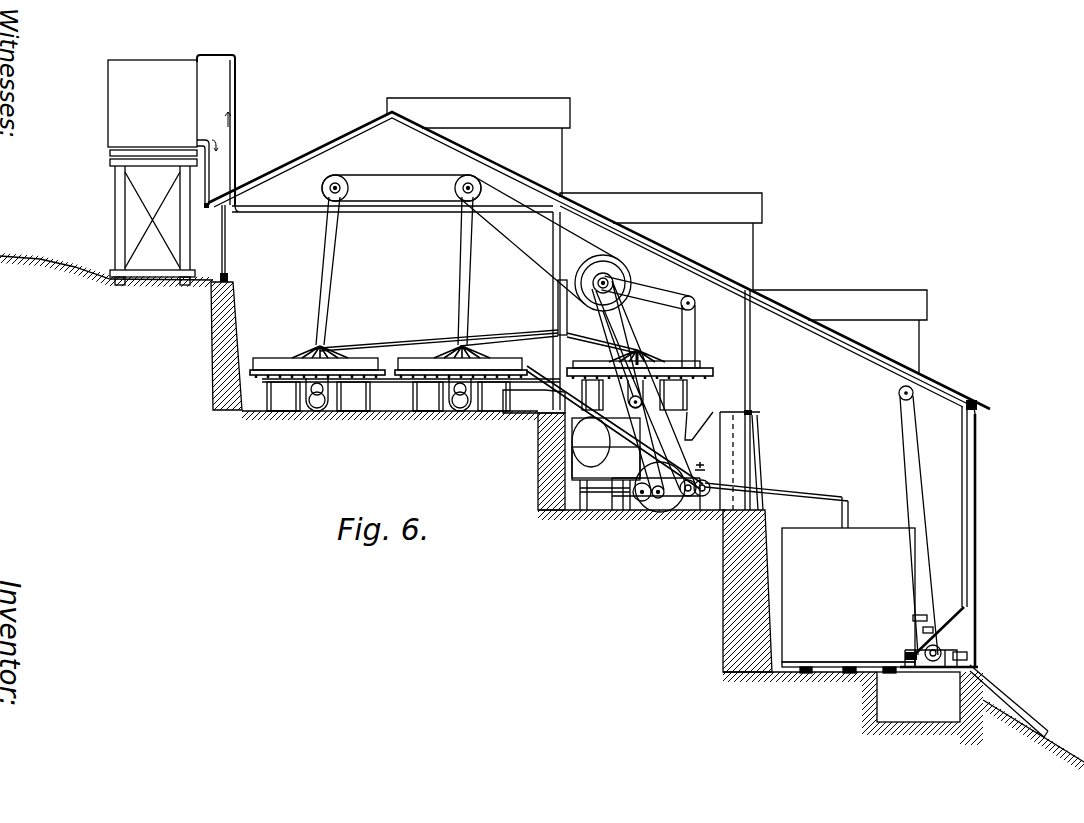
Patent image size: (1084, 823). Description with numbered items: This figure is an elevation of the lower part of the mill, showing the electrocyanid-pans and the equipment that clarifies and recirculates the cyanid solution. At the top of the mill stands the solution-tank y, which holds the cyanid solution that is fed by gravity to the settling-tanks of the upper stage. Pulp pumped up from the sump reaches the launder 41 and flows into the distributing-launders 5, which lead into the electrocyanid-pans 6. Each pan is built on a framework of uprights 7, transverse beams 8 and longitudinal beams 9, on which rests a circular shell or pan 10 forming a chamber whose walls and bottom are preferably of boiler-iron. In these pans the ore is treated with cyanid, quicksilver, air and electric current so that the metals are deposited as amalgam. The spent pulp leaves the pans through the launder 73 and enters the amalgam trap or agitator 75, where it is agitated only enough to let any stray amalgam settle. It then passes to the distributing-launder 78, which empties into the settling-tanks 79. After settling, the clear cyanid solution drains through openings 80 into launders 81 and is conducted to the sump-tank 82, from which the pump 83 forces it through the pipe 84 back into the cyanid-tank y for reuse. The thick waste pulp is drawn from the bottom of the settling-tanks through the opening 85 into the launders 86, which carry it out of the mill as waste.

The solution-tank y is at (108, 93).
The launder 41 is at (557, 282).
The distributing-launders 5 is at (507, 334).
The electrocyanid-pans 6 is at (473, 281).
The uprights 7 is at (477, 395).
The transverse beams 8 is at (284, 411).
The longitudinal beams 9 is at (266, 406).
The circular shell or pan 10 is at (262, 358).
The launder 73 is at (603, 427).
The amalgam trap or agitator 75 is at (582, 461).
The distributing-launder 78 is at (785, 491).
The settling-tanks 79 is at (848, 600).
The openings 80 is at (915, 618).
The launders 81 is at (925, 631).
The sump-tank 82 is at (918, 697).
The pump 83 is at (941, 650).
The pipe 84 is at (967, 559).
The opening 85 is at (967, 656).
The launders 86 is at (1000, 685).